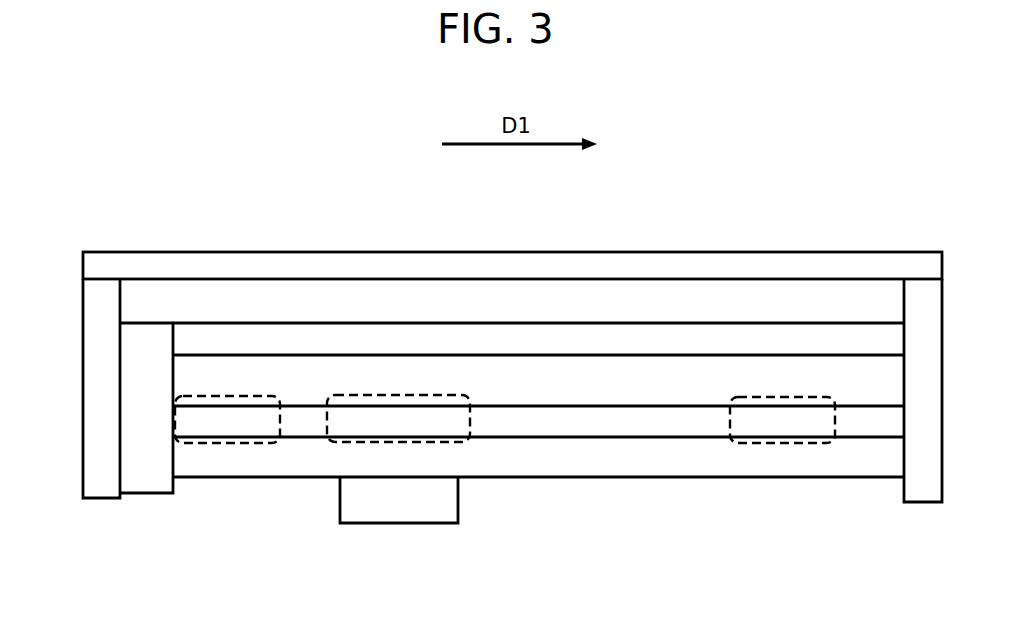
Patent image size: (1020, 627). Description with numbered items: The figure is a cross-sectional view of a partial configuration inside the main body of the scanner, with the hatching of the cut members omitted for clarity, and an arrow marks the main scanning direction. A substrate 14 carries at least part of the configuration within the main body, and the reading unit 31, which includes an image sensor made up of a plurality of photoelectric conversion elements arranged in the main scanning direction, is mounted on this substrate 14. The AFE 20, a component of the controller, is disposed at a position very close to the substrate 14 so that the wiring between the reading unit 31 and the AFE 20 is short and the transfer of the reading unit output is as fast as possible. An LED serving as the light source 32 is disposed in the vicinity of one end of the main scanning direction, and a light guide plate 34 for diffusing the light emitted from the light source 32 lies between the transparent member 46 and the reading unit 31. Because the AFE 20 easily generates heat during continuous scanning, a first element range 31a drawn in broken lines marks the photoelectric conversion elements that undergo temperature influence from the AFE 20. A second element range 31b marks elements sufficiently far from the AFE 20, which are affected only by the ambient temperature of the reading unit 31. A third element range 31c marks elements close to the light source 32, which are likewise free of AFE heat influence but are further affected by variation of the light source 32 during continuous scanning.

The transparent member 46 is at (162, 255).
The light guide plate 34 is at (508, 325).
The light source 32 is at (137, 412).
The reading unit 31 is at (585, 413).
The first element range 31a is at (330, 444).
The second element range 31b is at (787, 444).
The third element range 31c is at (232, 444).
The substrate 14 is at (558, 467).
The AFE 20 is at (373, 523).